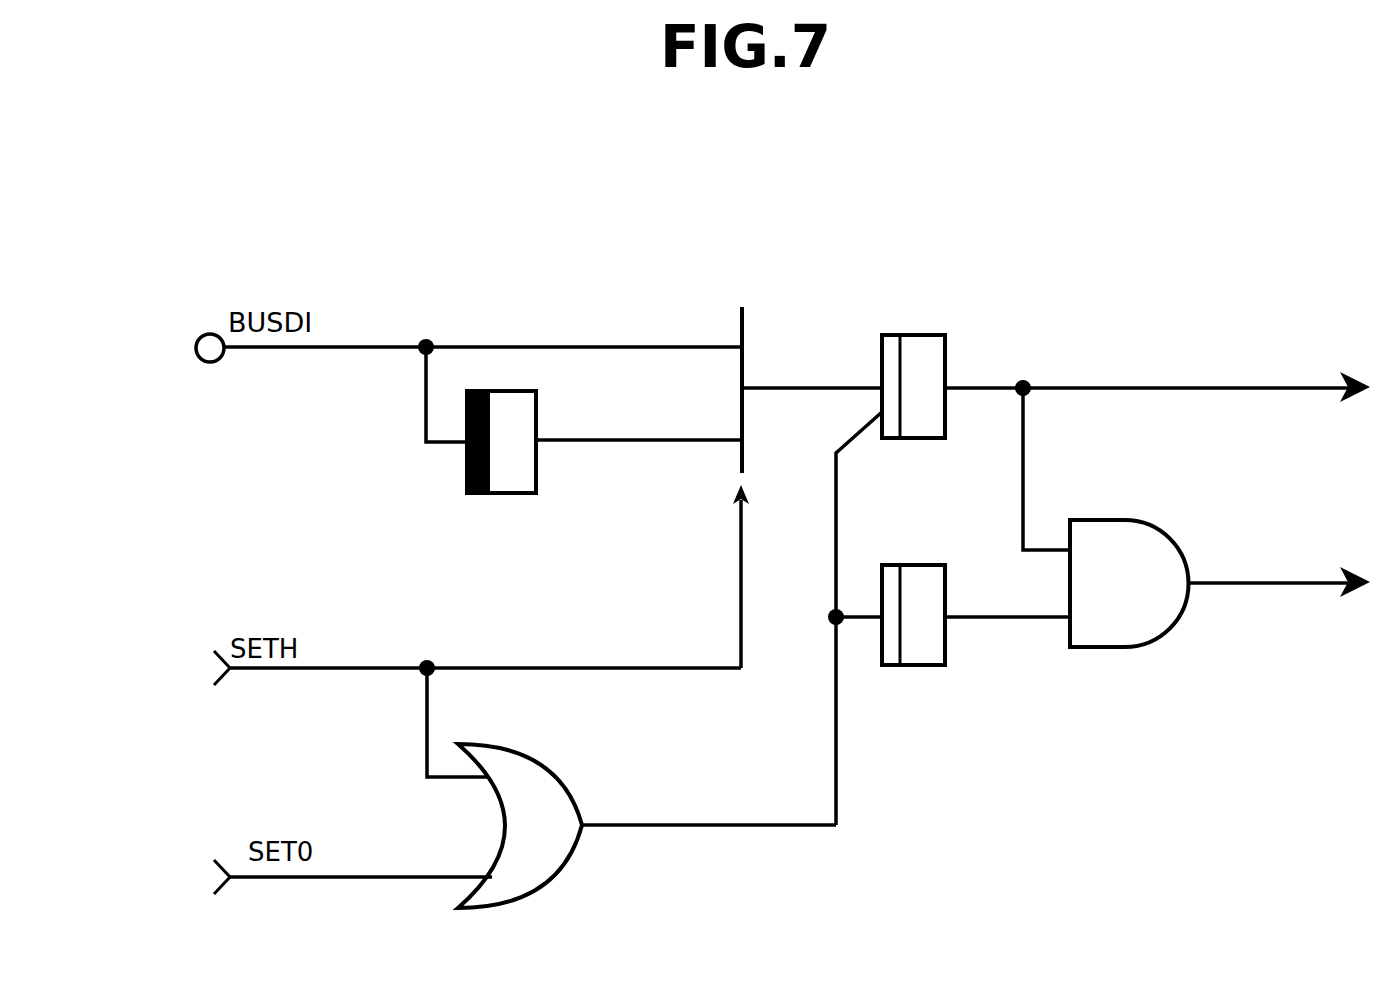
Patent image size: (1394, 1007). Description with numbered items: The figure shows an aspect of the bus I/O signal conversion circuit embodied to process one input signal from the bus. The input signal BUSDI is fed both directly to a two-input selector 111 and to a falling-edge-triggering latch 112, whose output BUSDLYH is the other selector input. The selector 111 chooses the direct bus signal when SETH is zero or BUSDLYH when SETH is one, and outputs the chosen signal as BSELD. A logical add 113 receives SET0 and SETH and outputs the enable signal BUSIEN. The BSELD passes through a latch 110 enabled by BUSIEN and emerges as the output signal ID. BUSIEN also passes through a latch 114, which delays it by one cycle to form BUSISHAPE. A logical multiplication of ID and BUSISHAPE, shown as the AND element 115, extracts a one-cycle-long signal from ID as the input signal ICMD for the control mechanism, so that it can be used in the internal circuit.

The latch 110 is at (915, 333).
The 2-input selector 111 is at (747, 301).
The falling-edge-triggering latch 112 is at (497, 391).
The logical add 113 is at (555, 772).
The latch 114 is at (907, 565).
The AND gate 115 is at (1107, 519).